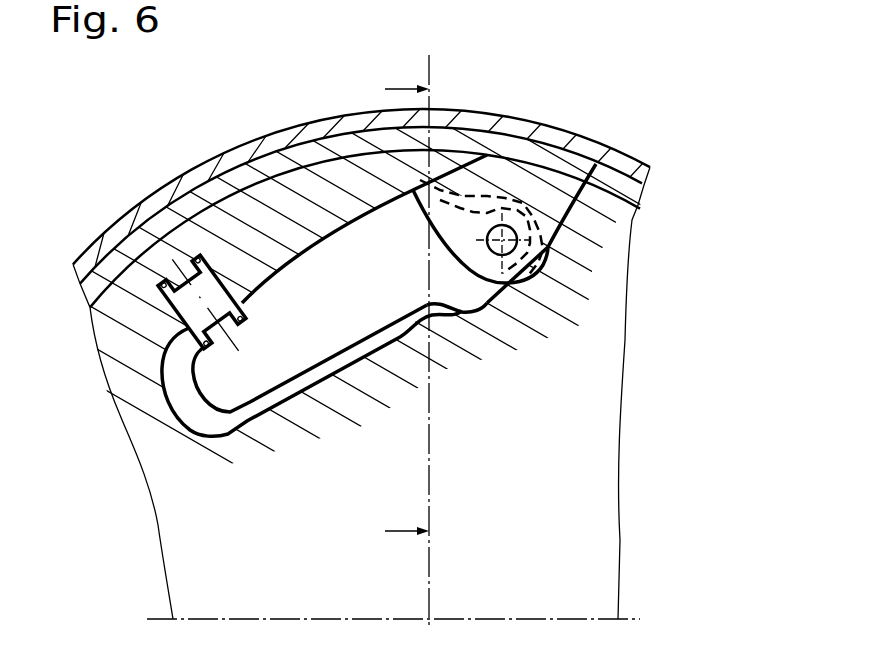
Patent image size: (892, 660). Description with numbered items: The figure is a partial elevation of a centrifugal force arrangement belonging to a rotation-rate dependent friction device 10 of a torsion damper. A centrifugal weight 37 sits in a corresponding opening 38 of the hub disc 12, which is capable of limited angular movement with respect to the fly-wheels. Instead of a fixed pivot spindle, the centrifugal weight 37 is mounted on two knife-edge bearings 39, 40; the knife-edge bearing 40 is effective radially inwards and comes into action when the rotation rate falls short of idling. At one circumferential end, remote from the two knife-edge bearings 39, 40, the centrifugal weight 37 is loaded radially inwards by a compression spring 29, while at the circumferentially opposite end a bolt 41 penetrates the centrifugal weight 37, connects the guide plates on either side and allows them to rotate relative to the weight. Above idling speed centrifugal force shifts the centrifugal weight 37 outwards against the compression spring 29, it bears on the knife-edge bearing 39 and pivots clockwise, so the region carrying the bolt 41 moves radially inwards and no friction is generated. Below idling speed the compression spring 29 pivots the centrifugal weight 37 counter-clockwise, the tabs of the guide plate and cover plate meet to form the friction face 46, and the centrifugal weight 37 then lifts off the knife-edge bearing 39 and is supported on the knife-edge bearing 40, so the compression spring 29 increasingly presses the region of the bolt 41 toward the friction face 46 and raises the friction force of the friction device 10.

The friction device 10 is at (570, 130).
The hub disc 12 is at (310, 188).
The compression spring 29 is at (165, 320).
The centrifugal weight 37 is at (308, 283).
The opening 38 is at (168, 206).
The knife-edge bearing 39 is at (440, 172).
The knife-edge bearing 40 is at (480, 315).
The bolt 41 is at (518, 252).
The friction face 46 is at (447, 127).